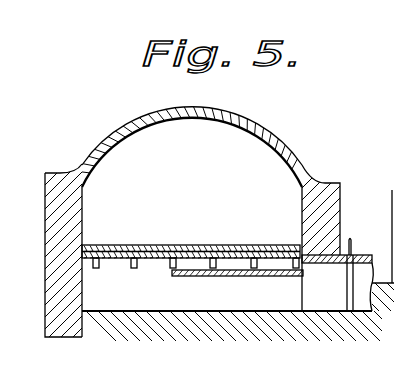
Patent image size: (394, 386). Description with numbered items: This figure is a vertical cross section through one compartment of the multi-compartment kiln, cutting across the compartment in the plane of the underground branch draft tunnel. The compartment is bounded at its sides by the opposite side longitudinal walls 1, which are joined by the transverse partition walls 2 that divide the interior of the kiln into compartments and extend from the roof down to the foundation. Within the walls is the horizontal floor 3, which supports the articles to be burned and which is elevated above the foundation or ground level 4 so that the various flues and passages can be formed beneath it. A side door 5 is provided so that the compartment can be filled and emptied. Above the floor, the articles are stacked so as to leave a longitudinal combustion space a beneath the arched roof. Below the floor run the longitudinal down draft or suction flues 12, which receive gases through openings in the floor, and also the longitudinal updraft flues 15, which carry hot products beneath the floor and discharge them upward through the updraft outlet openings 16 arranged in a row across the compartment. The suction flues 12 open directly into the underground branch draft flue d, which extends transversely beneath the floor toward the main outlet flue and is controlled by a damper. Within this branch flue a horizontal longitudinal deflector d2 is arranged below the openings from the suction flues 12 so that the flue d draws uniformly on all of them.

The side longitudinal wall 1 is at (56, 221).
The transverse partition wall 2 is at (339, 281).
The horizontal floor 3 is at (133, 227).
The foundation or ground level 4 is at (250, 312).
The side door 5 is at (42, 277).
The down draft suction flue 12 is at (254, 238).
The longitudinal updraft flue 15 is at (190, 277).
The updraft outlet opening 16 is at (116, 246).
The longitudinal combustion space a is at (111, 207).
The branch draft flue d is at (238, 285).
The horizontal longitudinal deflector d2 is at (251, 277).